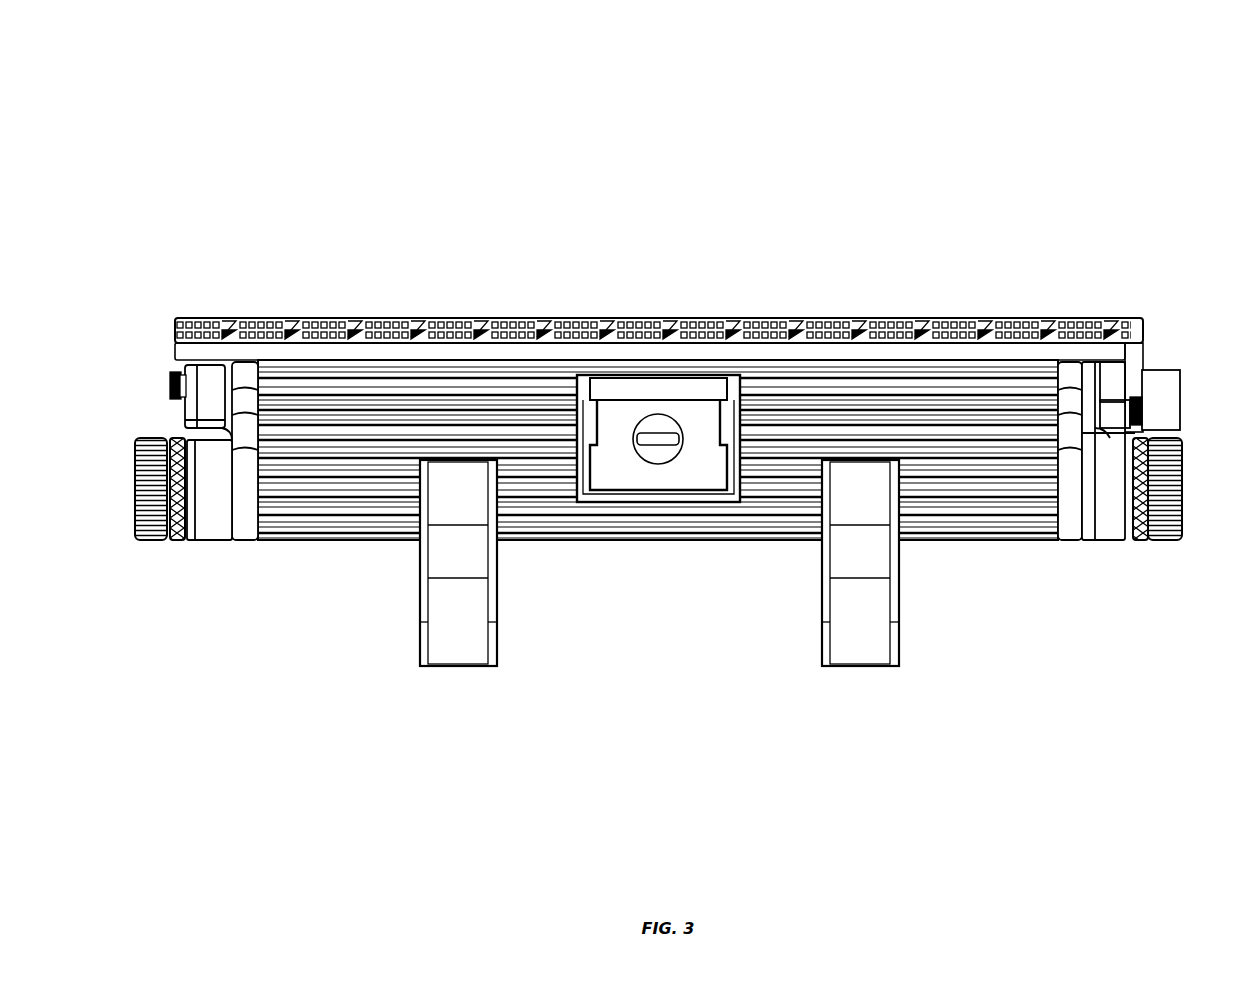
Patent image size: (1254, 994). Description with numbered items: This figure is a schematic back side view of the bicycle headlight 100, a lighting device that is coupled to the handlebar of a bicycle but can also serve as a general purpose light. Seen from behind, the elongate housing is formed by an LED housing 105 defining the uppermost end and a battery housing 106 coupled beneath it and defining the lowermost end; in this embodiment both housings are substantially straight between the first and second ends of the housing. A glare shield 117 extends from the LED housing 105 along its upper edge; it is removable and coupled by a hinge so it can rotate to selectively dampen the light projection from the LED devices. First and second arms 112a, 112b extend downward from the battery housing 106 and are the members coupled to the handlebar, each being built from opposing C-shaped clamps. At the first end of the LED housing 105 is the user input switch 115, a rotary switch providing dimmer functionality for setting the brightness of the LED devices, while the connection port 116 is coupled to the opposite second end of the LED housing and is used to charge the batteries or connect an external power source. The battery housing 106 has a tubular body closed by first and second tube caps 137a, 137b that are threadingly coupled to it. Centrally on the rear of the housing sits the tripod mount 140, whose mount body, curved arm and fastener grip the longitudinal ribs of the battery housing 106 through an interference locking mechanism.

The bicycle headlight 100 is at (874, 112).
The LED housing 105 is at (829, 390).
The battery housing 106 is at (589, 532).
The first arm 112a is at (863, 672).
The second arm 112b is at (453, 672).
The user input switch 115 is at (1178, 368).
The connection port 116 is at (170, 372).
The glare shield 117 is at (496, 316).
The first tube cap 137a is at (1163, 522).
The second tube cap 137b is at (155, 522).
The tripod mount 140 is at (676, 494).